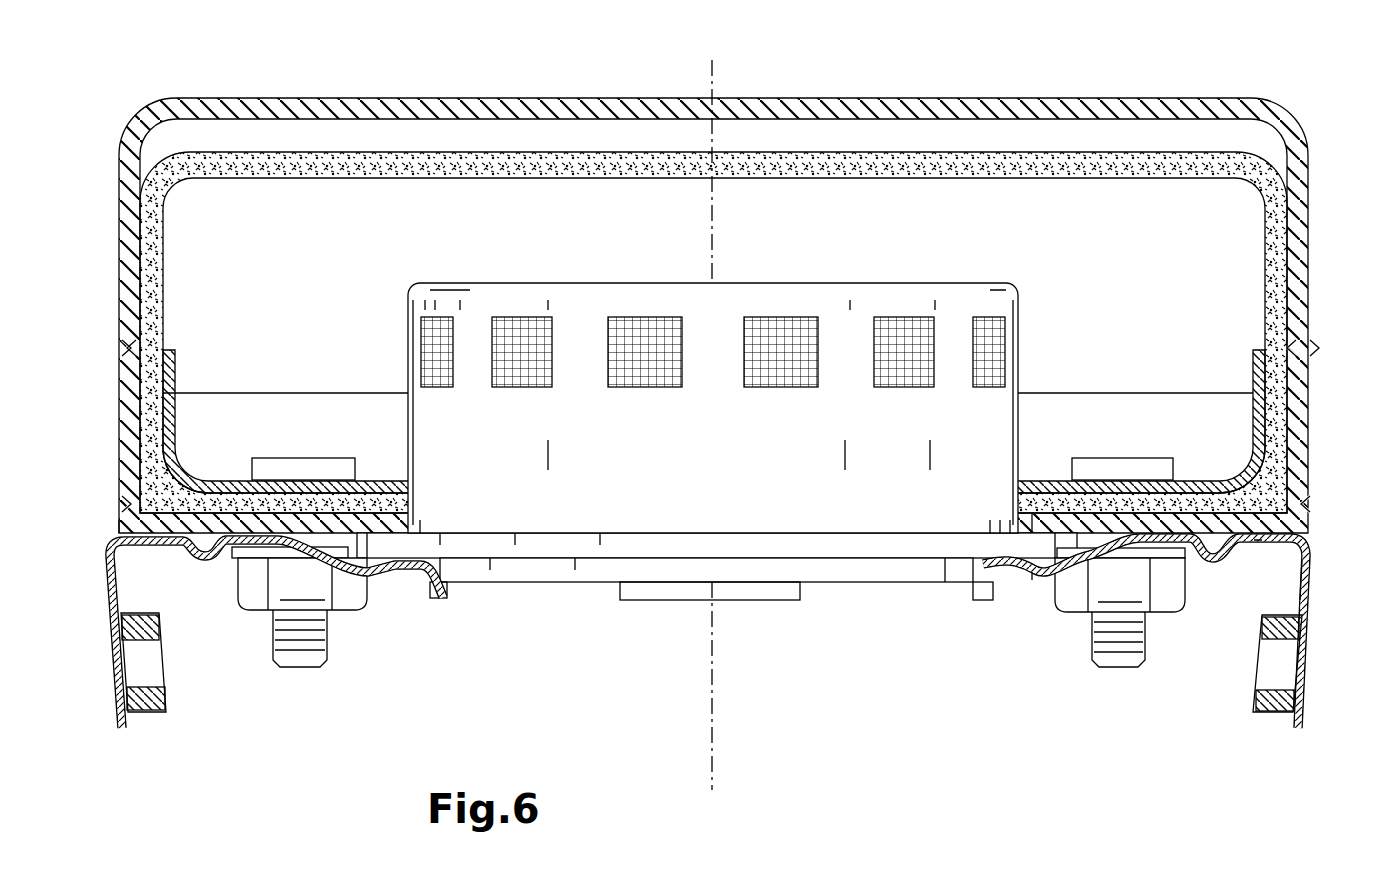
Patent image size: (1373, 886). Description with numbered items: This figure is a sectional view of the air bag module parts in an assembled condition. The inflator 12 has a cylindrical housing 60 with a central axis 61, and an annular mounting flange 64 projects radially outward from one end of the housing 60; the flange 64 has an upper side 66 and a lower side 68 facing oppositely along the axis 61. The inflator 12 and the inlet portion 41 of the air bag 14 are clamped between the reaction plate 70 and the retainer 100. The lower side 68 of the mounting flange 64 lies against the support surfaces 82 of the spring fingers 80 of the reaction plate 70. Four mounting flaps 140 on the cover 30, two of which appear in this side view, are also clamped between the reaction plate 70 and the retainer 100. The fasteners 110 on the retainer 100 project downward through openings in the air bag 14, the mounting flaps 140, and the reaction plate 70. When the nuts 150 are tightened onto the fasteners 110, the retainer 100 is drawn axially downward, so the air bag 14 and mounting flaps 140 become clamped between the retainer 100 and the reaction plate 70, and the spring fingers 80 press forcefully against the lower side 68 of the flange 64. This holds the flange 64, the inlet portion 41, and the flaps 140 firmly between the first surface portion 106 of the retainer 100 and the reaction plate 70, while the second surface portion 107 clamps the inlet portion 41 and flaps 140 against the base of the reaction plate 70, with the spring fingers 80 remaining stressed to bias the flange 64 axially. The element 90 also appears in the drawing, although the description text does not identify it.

The inflator 12 is at (820, 268).
The air bag 14 is at (397, 152).
The cover 30 is at (878, 97).
The inlet portion 41 is at (218, 480).
The cylindrical housing 60 is at (583, 328).
The central axis 61 is at (712, 748).
The annular mounting flange 64 is at (862, 560).
The upper side 66 is at (1032, 526).
The lower side 68 is at (1032, 568).
The reaction plate 70 is at (1318, 542).
The spring fingers 80 is at (333, 557).
The support surfaces 82 is at (423, 558).
The mounting bracket 90 is at (208, 552).
The retainer 100 is at (170, 393).
The first surface portion 106 is at (384, 493).
The second surface portion 107 is at (262, 493).
The fasteners 110 is at (300, 668).
The mounting flaps 140 is at (128, 522).
The nuts 150 is at (362, 592).